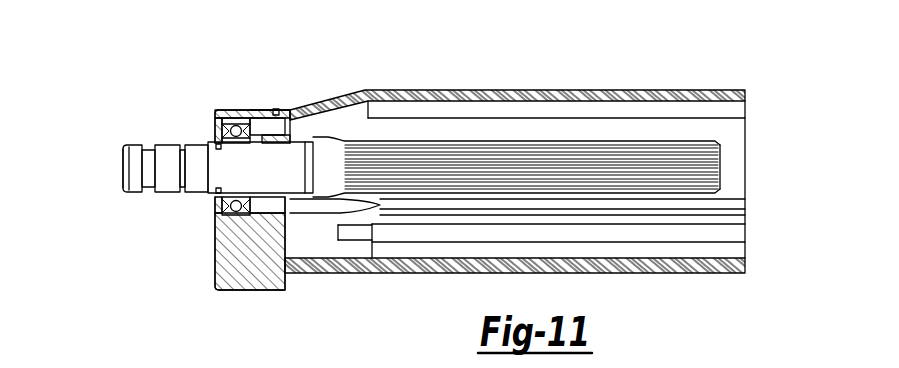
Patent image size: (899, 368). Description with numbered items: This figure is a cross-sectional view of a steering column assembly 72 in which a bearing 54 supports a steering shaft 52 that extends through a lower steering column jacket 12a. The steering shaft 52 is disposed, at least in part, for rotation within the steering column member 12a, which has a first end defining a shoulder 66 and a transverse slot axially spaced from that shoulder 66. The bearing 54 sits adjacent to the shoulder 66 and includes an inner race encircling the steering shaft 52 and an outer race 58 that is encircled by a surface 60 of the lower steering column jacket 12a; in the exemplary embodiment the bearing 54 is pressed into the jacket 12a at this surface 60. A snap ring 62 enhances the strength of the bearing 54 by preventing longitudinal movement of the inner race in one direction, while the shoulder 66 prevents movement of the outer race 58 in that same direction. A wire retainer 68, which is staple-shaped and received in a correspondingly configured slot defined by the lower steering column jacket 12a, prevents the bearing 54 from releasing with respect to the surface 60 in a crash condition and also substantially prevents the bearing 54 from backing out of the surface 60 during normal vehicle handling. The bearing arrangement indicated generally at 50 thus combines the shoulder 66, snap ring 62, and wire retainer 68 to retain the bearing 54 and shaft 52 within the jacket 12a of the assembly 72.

The lower steering column jacket 12a is at (592, 92).
The bearing assembly 50 is at (270, 102).
The steering shaft 52 is at (131, 150).
The bearing 54 is at (246, 116).
The outer race 58 is at (238, 216).
The surface 60 is at (225, 215).
The snap ring 62 is at (213, 137).
The shoulder 66 is at (207, 204).
The wire retainer 68 is at (279, 110).
The steering column assembly 72 is at (100, 228).